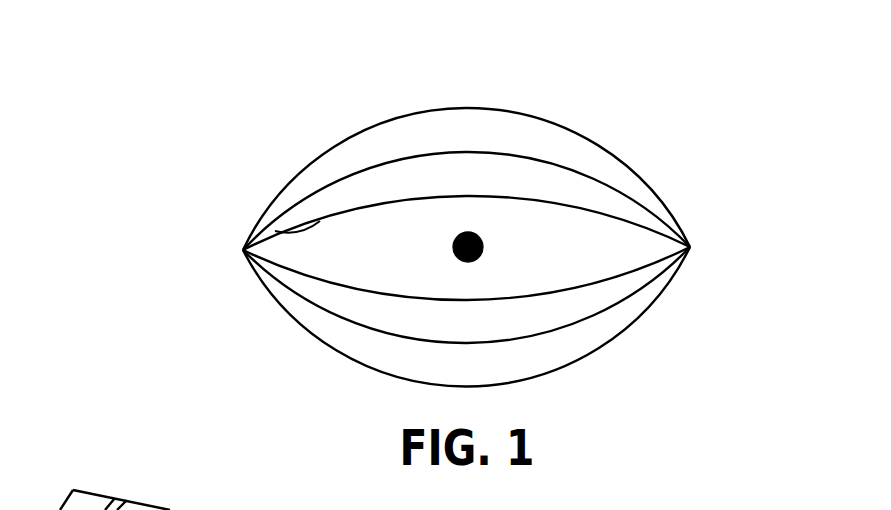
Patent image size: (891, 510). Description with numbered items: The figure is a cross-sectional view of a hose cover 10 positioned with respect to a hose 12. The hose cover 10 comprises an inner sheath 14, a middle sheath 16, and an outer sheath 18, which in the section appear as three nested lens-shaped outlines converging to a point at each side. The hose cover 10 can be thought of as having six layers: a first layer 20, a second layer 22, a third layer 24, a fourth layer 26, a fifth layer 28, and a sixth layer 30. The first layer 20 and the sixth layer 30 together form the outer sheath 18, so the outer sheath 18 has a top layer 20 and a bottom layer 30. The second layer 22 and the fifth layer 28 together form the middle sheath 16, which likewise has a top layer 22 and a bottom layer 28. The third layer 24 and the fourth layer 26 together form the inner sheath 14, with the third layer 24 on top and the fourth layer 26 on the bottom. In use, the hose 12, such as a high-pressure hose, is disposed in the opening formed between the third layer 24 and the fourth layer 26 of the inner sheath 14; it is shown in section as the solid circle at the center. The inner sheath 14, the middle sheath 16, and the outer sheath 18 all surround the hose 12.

The hose cover 10 is at (680, 144).
The hose 12 is at (484, 253).
The inner sheath 14 is at (275, 231).
The middle sheath 16 is at (305, 195).
The outer sheath 18 is at (313, 158).
The first layer 20 is at (593, 142).
The second layer 22 is at (502, 153).
The third layer 24 is at (385, 200).
The fourth layer 26 is at (300, 278).
The fifth layer 28 is at (320, 312).
The sixth layer 30 is at (592, 354).